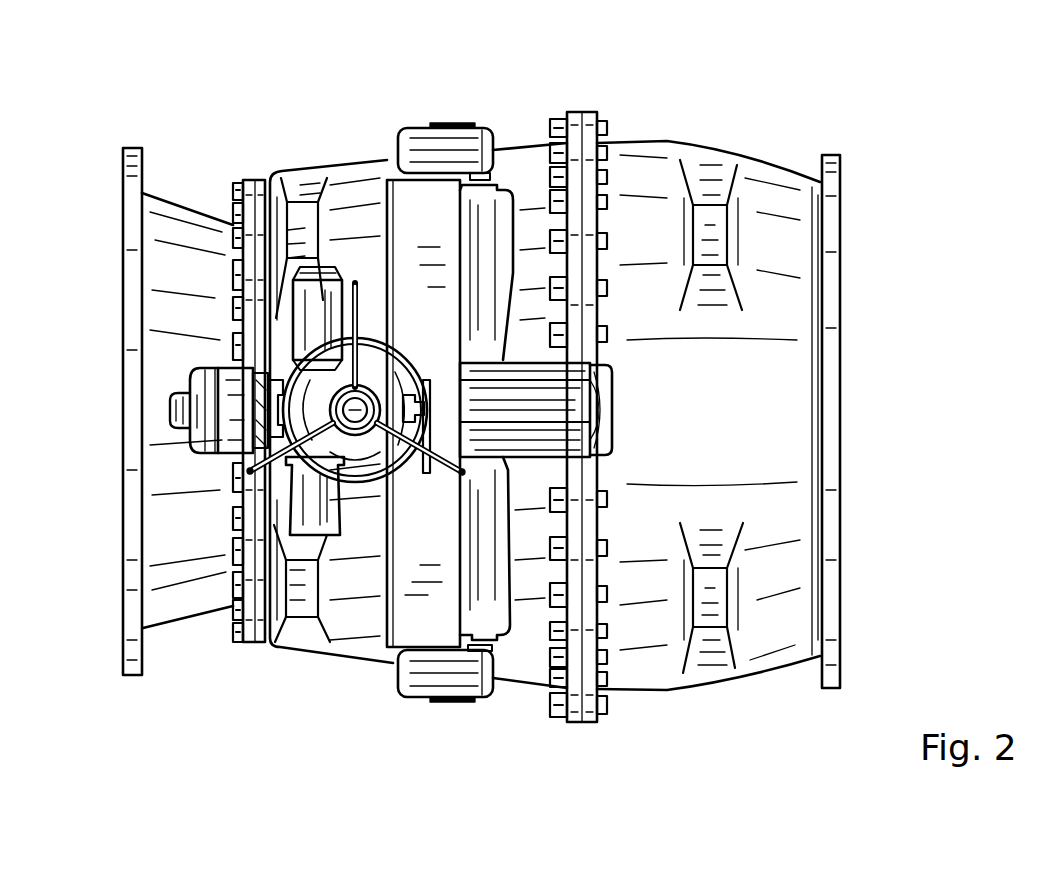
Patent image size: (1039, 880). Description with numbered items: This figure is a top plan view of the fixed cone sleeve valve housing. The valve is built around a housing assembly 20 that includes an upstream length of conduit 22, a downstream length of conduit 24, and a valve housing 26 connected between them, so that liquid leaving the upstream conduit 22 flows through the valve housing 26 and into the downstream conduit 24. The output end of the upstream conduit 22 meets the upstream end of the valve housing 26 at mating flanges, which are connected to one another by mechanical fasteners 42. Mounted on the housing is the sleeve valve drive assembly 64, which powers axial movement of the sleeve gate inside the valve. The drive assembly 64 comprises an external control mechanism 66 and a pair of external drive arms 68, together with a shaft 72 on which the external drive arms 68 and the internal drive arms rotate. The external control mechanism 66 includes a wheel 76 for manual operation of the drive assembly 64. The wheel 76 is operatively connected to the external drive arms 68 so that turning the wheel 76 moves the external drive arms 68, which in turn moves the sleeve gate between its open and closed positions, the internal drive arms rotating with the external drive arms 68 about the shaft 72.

The housing assembly 20 is at (760, 108).
The upstream length of conduit 22 is at (185, 200).
The downstream length of conduit 24 is at (680, 143).
The valve housing 26 is at (522, 140).
The mechanical fasteners 42 is at (233, 548).
The sleeve valve drive assembly 64 is at (193, 460).
The external control mechanism 66 is at (234, 387).
The external drive arms 68 is at (405, 128).
The shaft 72 is at (447, 125).
The wheel 76 is at (359, 497).